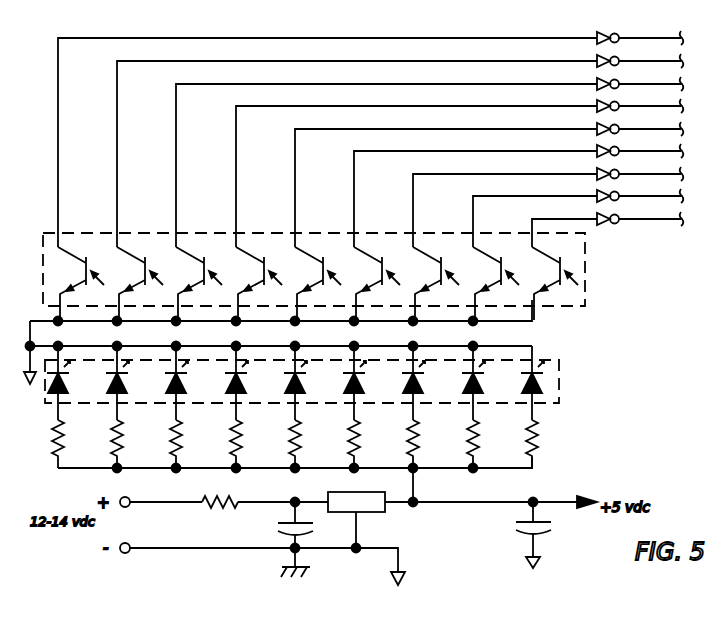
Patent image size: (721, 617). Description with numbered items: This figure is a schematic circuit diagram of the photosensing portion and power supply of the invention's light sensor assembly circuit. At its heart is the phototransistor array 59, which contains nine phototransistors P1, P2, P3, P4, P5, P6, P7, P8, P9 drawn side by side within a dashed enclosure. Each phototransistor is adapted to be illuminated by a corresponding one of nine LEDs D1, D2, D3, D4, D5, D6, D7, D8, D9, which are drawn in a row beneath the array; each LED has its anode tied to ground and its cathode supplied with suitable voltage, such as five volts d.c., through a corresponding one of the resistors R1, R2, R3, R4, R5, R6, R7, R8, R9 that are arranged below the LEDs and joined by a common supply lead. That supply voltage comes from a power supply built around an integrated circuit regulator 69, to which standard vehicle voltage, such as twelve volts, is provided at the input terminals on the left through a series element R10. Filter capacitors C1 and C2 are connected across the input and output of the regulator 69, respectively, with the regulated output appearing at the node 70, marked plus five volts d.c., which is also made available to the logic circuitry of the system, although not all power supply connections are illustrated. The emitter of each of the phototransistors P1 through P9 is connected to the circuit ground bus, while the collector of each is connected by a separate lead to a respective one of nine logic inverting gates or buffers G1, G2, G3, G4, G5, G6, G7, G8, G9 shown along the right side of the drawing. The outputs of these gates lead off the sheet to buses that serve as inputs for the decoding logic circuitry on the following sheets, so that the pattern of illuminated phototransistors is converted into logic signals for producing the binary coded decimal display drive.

The logic inverting gate G1 is at (612, 34).
The logic inverting gate G2 is at (612, 57).
The logic inverting gate G3 is at (612, 80).
The logic inverting gate G4 is at (612, 102).
The logic inverting gate G5 is at (612, 125).
The logic inverting gate G6 is at (612, 147).
The logic inverting gate G7 is at (612, 170).
The logic inverting gate G8 is at (612, 192).
The logic inverting gate G9 is at (612, 215).
The phototransistor P1 is at (98, 258).
The phototransistor P2 is at (157, 258).
The phototransistor P3 is at (216, 258).
The phototransistor P4 is at (276, 258).
The phototransistor P5 is at (335, 258).
The phototransistor P6 is at (394, 258).
The phototransistor P7 is at (453, 258).
The phototransistor P8 is at (513, 258).
The phototransistor P9 is at (571, 262).
The phototransistor array 59 is at (588, 288).
The LED D1 is at (50, 380).
The LED D2 is at (109, 380).
The LED D3 is at (168, 380).
The LED D4 is at (228, 380).
The LED D5 is at (287, 380).
The LED D6 is at (346, 380).
The LED D7 is at (405, 380).
The LED D8 is at (465, 380).
The LED D9 is at (524, 380).
The resistor R1 is at (50, 435).
The resistor R2 is at (109, 435).
The resistor R3 is at (168, 435).
The resistor R4 is at (228, 435).
The resistor R5 is at (287, 435).
The resistor R6 is at (346, 435).
The resistor R7 is at (405, 435).
The resistor R8 is at (465, 435).
The resistor R9 is at (524, 435).
The resistor R10 is at (216, 513).
The integrated circuit regulator 69 is at (367, 513).
The output terminal 70 is at (538, 498).
The filter capacitor C1 is at (272, 526).
The filter capacitor C2 is at (552, 530).